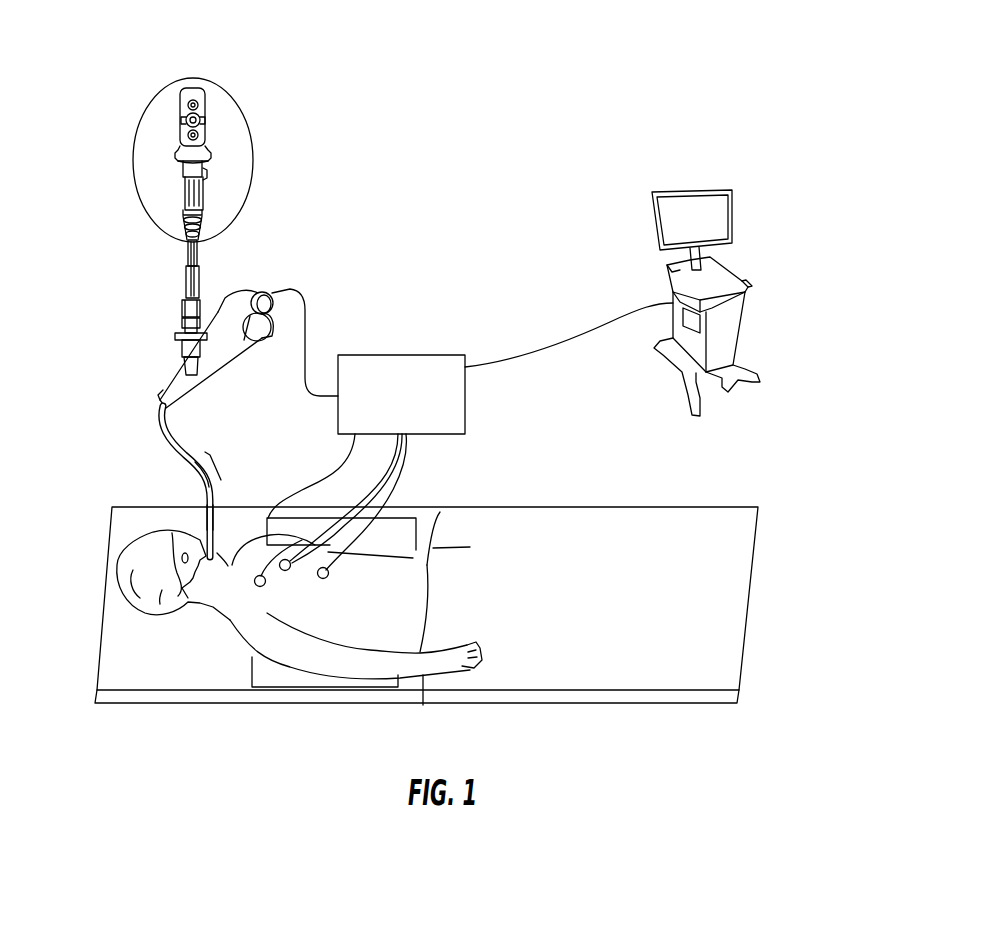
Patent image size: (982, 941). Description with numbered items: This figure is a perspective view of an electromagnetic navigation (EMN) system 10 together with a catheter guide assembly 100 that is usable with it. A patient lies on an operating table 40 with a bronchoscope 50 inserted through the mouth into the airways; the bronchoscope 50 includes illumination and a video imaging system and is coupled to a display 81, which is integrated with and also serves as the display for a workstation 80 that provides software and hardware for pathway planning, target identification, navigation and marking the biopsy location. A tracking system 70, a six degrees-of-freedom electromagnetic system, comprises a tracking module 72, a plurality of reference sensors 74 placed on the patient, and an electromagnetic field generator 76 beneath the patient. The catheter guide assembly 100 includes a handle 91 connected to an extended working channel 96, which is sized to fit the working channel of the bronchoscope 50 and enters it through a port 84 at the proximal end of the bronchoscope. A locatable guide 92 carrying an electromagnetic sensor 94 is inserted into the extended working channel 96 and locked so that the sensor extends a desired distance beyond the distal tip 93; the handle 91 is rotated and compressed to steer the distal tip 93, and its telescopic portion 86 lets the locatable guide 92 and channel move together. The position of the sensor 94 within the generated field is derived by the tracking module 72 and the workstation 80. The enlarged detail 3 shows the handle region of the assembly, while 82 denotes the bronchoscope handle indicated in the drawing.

The EMN system 10 is at (772, 72).
The catheter guide assembly 100 is at (108, 148).
The airway device 3 is at (236, 100).
The handle 91 is at (203, 207).
The telescopic portion 86 is at (199, 233).
The locatable guide 92 is at (185, 297).
The port 84 is at (183, 298).
The handle 82 is at (270, 285).
The bronchoscope 50 is at (170, 443).
The distal tip 93 is at (200, 477).
The electromagnetic sensor 94 is at (214, 463).
The extended working channel 96 is at (214, 516).
The tracking system 70 is at (451, 285).
The tracking module 72 is at (411, 406).
The display 81 is at (733, 223).
The workstation 80 is at (740, 315).
The operating table 40 is at (128, 640).
The electromagnetic field generator 76 is at (267, 678).
The reference sensors 74 is at (264, 586).